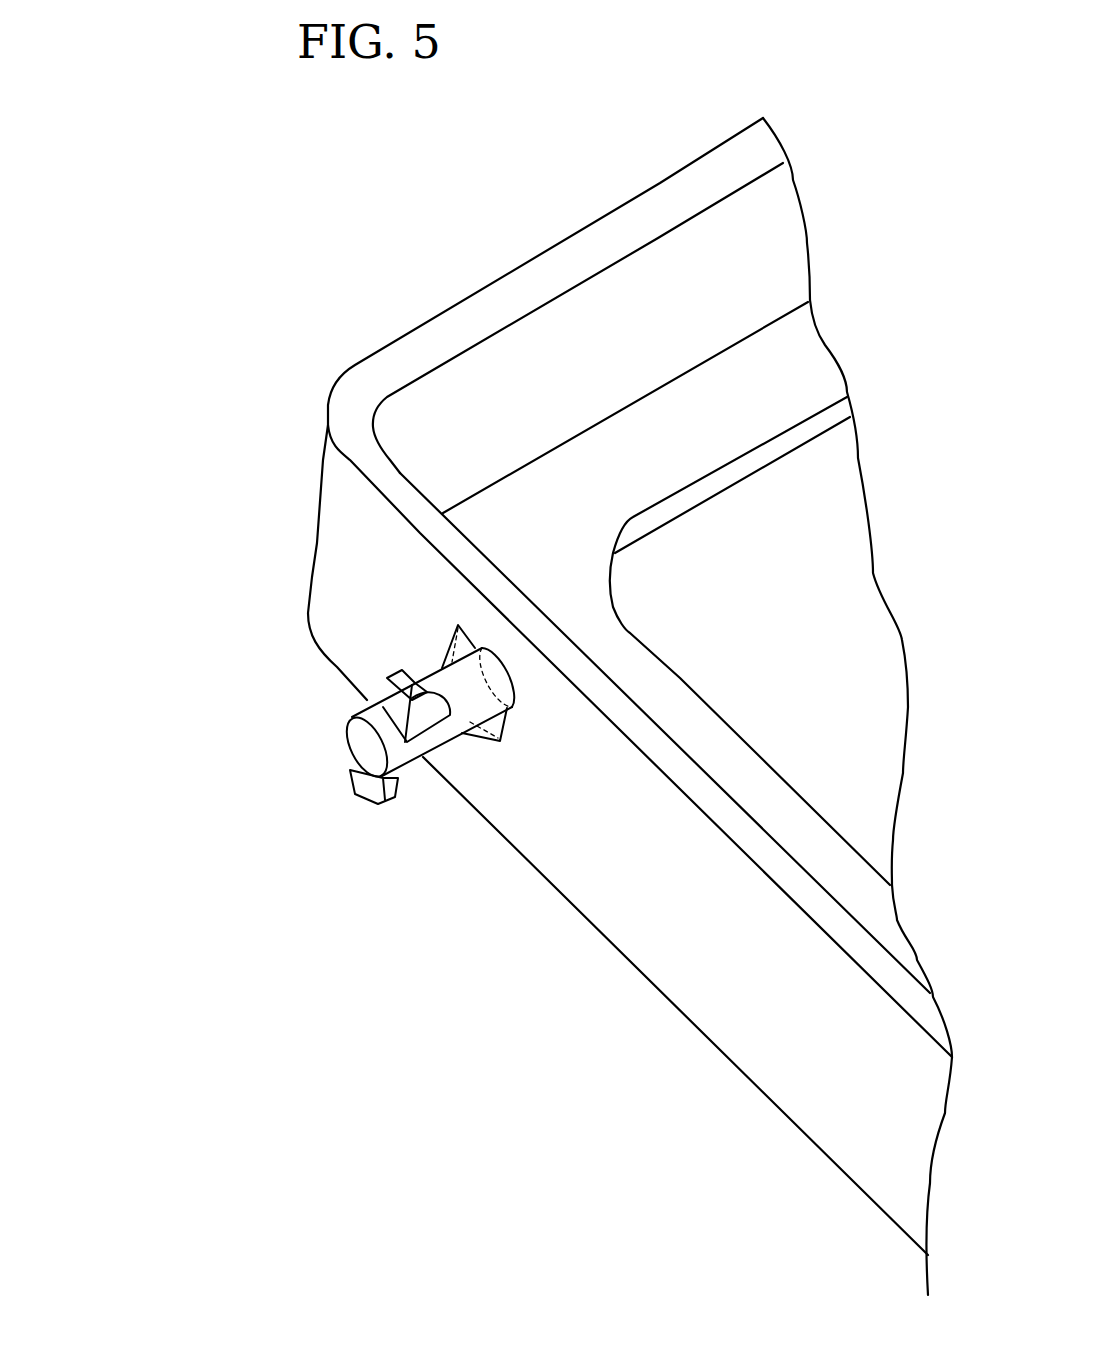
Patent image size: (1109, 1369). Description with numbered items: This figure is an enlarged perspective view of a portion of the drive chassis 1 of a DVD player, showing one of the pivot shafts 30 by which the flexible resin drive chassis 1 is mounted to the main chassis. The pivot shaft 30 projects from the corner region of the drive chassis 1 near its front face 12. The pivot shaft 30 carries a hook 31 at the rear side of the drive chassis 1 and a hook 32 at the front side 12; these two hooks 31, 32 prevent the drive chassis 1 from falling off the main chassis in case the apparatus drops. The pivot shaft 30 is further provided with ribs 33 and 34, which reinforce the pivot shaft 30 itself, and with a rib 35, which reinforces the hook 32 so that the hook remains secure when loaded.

The drive chassis 1 is at (630, 706).
The front face of the drive chassis 12 is at (760, 797).
The pivot shaft 30 is at (279, 702).
The hook 31 is at (363, 793).
The hook 32 is at (393, 673).
The rib 33 is at (447, 640).
The rib 34 is at (480, 733).
The rib 35 is at (363, 710).